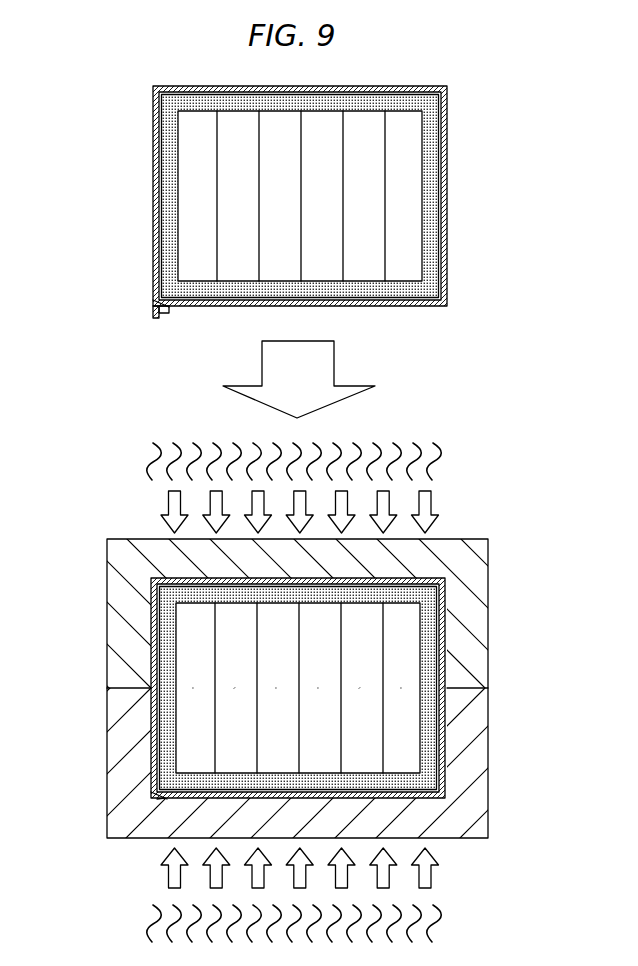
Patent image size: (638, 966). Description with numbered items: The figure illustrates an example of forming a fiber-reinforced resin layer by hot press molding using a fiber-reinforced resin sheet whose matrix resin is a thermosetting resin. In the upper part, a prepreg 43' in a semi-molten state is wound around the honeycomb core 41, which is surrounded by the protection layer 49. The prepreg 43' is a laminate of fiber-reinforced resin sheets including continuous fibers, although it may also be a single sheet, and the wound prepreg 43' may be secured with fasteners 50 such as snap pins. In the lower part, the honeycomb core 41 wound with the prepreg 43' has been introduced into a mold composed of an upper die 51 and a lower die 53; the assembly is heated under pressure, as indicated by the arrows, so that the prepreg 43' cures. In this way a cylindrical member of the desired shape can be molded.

The honeycomb core 41 is at (197, 182).
The prepreg 43' is at (346, 442).
The protection layer 49 is at (445, 211).
The fastener 50 is at (153, 302).
The upper die 51 is at (475, 630).
The lower die 53 is at (475, 766).